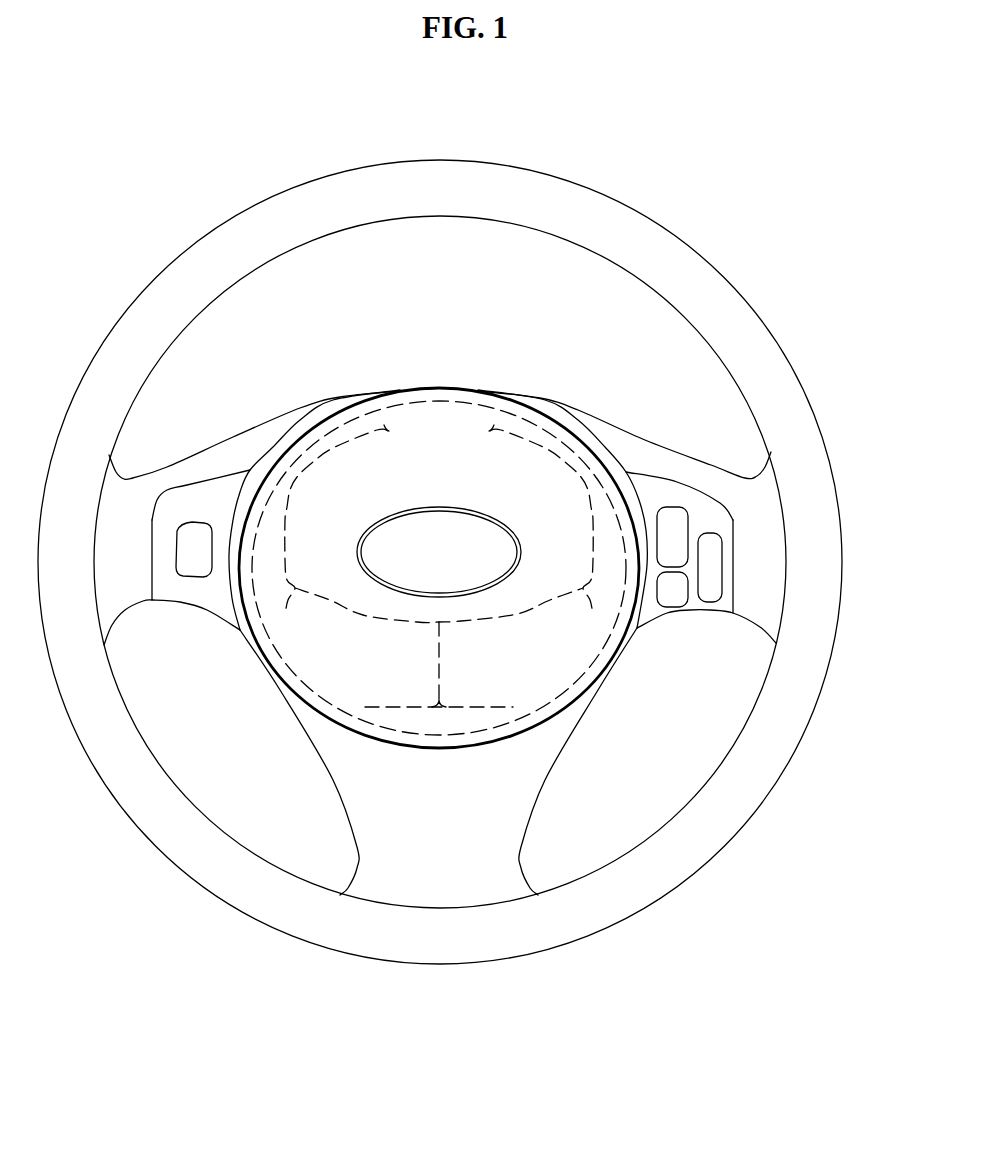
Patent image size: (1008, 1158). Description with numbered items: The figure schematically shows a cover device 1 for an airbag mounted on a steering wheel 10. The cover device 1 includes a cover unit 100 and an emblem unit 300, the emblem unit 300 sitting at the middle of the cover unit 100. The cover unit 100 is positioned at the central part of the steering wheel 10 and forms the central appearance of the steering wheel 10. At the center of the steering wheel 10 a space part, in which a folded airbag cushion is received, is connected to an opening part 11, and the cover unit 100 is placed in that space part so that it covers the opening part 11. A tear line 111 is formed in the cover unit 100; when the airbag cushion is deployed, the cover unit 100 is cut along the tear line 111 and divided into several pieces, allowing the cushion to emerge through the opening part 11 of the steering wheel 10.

The cover device 1 is at (462, 545).
The steering wheel 10 is at (760, 506).
The opening part 11 is at (597, 462).
The cover unit 100 is at (357, 437).
The tear line 111 is at (353, 438).
The emblem unit 300 is at (375, 547).